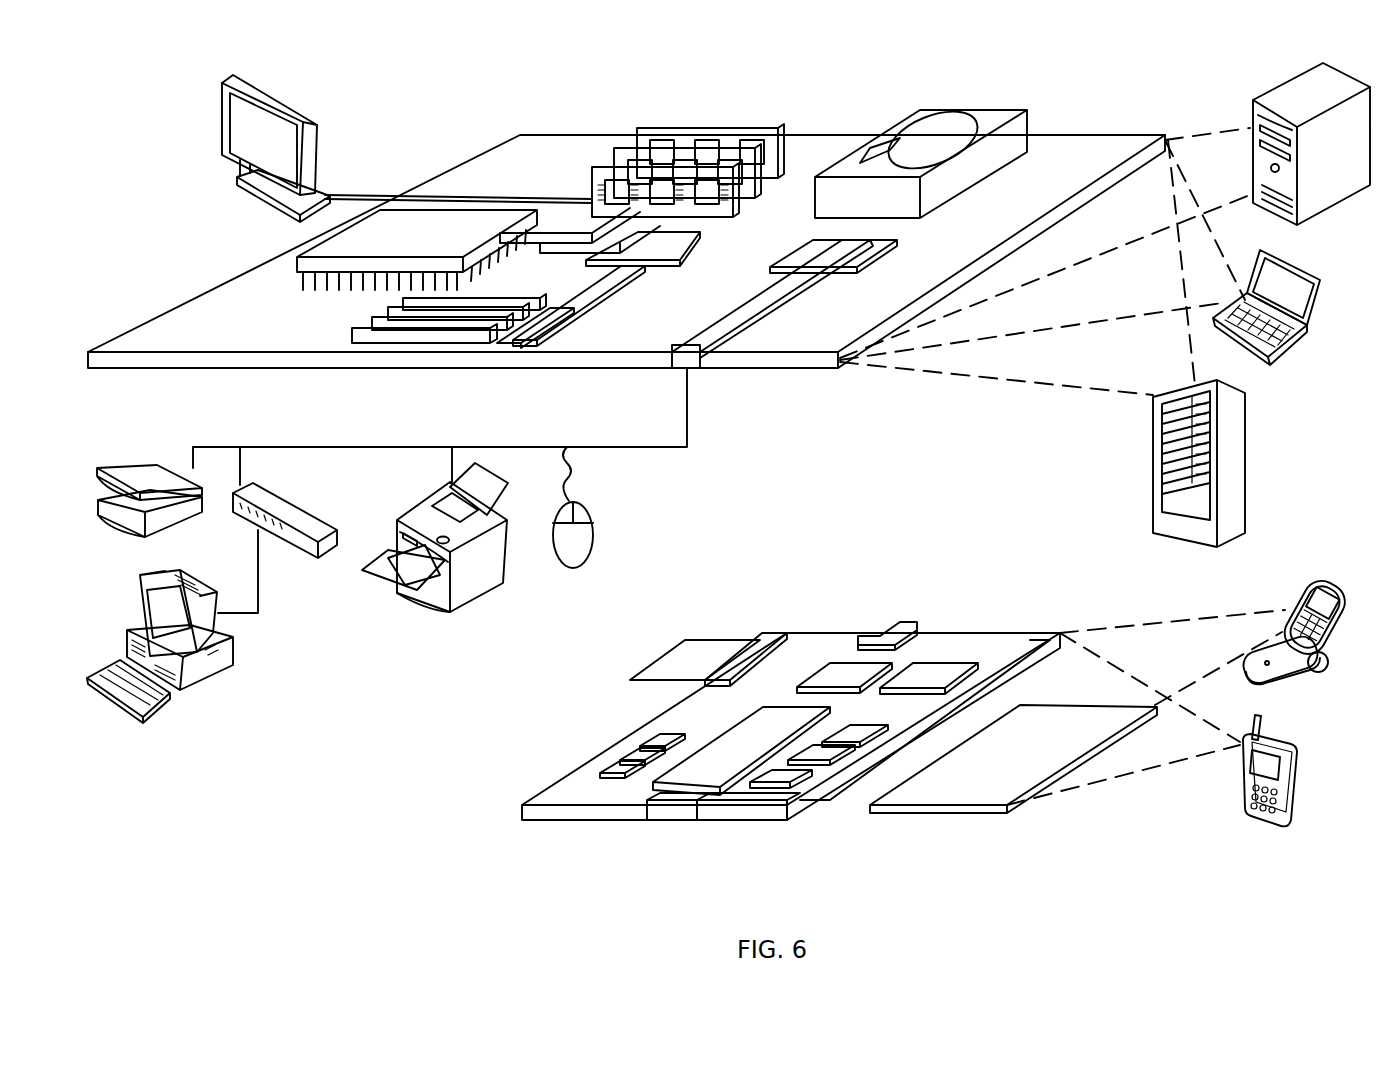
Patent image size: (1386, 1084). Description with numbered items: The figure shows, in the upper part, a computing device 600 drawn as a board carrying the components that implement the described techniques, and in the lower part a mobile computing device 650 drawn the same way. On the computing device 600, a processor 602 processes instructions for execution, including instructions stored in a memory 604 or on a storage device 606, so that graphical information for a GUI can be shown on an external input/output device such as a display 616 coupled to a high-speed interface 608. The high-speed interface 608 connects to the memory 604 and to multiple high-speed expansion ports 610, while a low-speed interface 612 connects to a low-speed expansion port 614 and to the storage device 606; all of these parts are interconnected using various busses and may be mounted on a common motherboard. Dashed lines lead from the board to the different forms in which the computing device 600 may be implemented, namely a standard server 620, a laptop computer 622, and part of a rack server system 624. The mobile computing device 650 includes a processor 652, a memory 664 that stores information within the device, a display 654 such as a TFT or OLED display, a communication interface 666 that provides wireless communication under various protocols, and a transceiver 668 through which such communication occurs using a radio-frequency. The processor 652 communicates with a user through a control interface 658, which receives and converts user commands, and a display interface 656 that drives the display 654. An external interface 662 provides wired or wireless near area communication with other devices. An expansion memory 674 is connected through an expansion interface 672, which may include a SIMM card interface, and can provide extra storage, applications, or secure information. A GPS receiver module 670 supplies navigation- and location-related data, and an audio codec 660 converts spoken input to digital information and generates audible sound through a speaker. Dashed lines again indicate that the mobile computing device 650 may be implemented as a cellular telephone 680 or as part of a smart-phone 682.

The computing device 600 is at (440, 103).
The processor 602 is at (297, 264).
The memory 604 is at (654, 126).
The storage device 606 is at (921, 125).
The high-speed interface 608 is at (576, 244).
The high-speed expansion ports 610 is at (359, 325).
The low-speed interface 612 is at (804, 249).
The low-speed expansion port 614 is at (732, 367).
The display 616 is at (222, 83).
The standard server 620 is at (1251, 119).
The laptop computer 622 is at (1320, 282).
The rack server system 624 is at (1152, 495).
The mobile computing device 650 is at (496, 832).
The processor 652 is at (713, 771).
The display 654 is at (970, 791).
The display interface 656 is at (791, 786).
The control interface 658 is at (823, 760).
The audio codec 660 is at (852, 743).
The external interface 662 is at (675, 789).
The memory 664 is at (620, 768).
The communication interface 666 is at (843, 677).
The transceiver 668 is at (925, 673).
The GPS receiver module 670 is at (899, 632).
The expansion interface 672 is at (764, 652).
The expansion memory 674 is at (676, 652).
The cellular telephone 680 is at (1308, 593).
The smart-phone 682 is at (1240, 775).